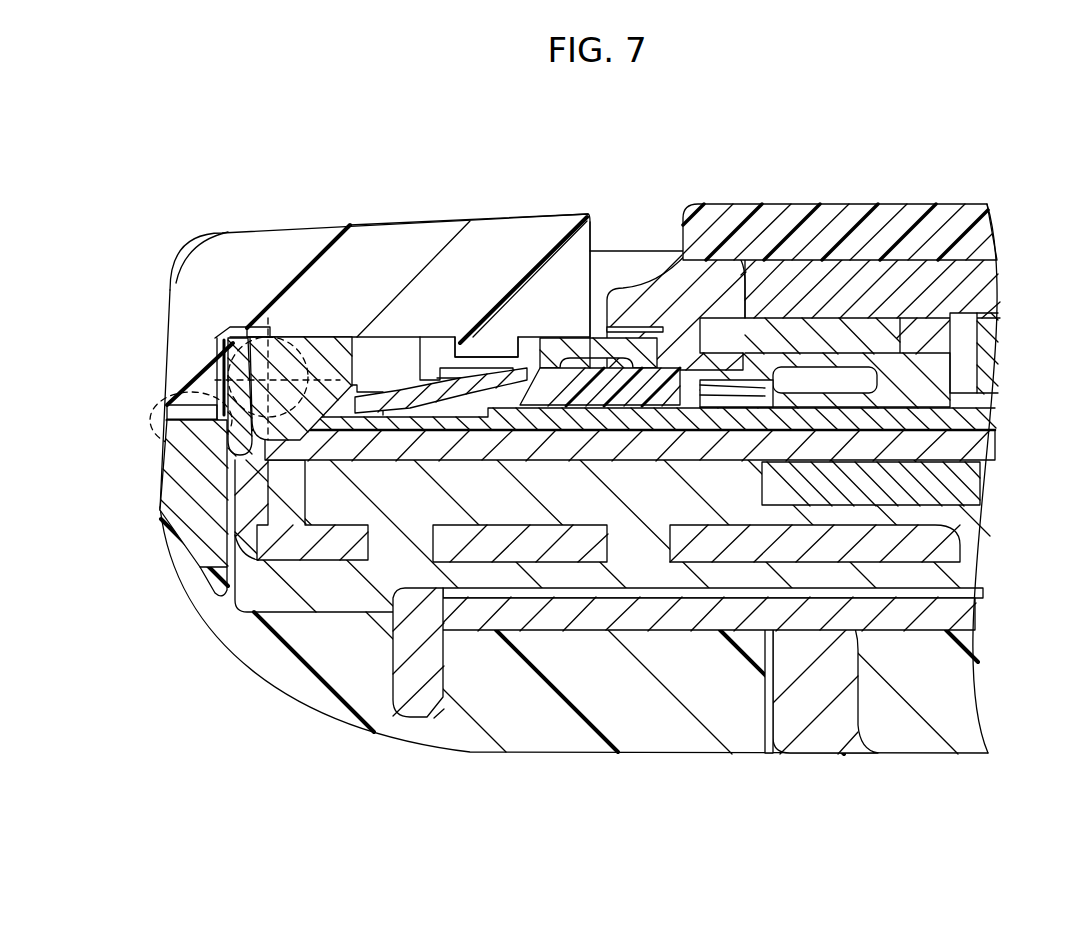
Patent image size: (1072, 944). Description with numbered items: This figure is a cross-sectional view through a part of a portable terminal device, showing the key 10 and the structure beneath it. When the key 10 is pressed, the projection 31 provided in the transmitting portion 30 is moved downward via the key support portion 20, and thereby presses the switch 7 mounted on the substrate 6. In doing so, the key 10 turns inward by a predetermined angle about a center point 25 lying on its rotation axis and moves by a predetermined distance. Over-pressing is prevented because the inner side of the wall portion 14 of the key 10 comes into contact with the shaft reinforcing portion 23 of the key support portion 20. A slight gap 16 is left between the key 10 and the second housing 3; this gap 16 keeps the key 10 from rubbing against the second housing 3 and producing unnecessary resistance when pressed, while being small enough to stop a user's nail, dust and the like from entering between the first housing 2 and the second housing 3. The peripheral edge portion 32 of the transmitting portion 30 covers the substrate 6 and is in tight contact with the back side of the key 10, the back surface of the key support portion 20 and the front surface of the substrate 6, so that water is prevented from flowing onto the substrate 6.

The first housing 2 is at (937, 217).
The second housing 3 is at (397, 730).
The substrate 6 is at (993, 445).
The switch 7 is at (700, 400).
The key 10 is at (390, 243).
The wall portion 14 is at (180, 340).
The gap 16 is at (153, 410).
The key support portion 20 is at (331, 345).
The shaft reinforcing portion 23 is at (255, 447).
The center point 25 is at (247, 322).
The transmitting portion 30 is at (595, 368).
The projection 31 is at (523, 368).
The peripheral edge portion 32 is at (418, 376).